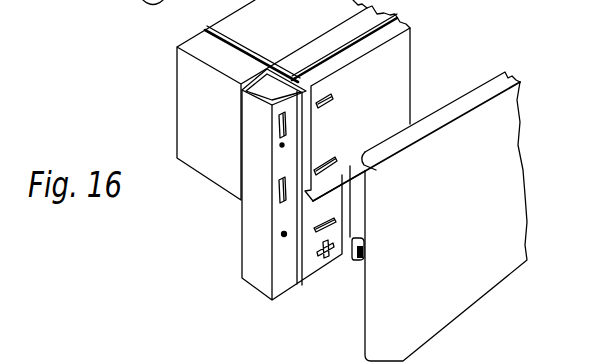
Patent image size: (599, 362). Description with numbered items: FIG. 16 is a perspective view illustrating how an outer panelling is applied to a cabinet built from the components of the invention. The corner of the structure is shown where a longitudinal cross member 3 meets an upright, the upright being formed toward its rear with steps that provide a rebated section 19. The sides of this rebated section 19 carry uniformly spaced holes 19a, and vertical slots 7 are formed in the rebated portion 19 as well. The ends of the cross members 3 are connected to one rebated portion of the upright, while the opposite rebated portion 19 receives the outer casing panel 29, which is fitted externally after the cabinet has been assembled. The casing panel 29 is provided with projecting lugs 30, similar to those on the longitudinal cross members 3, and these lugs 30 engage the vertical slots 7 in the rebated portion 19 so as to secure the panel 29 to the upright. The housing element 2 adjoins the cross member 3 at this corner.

The housing body 2 is at (387, 75).
The longitudinal cross member 3 is at (200, 95).
The vertical slot 7 is at (282, 133).
The rebated section 19 is at (280, 263).
The hole 19a is at (284, 234).
The outer casing panel 29 is at (480, 142).
The projecting lug 30 is at (358, 254).